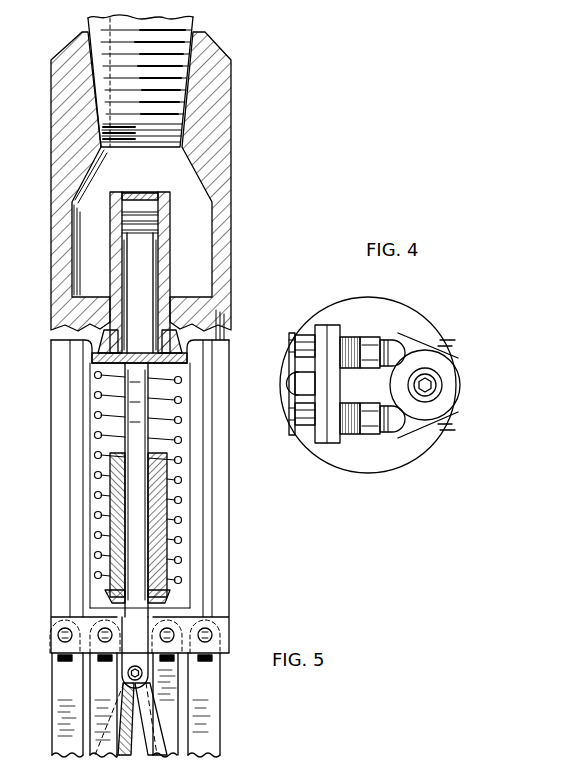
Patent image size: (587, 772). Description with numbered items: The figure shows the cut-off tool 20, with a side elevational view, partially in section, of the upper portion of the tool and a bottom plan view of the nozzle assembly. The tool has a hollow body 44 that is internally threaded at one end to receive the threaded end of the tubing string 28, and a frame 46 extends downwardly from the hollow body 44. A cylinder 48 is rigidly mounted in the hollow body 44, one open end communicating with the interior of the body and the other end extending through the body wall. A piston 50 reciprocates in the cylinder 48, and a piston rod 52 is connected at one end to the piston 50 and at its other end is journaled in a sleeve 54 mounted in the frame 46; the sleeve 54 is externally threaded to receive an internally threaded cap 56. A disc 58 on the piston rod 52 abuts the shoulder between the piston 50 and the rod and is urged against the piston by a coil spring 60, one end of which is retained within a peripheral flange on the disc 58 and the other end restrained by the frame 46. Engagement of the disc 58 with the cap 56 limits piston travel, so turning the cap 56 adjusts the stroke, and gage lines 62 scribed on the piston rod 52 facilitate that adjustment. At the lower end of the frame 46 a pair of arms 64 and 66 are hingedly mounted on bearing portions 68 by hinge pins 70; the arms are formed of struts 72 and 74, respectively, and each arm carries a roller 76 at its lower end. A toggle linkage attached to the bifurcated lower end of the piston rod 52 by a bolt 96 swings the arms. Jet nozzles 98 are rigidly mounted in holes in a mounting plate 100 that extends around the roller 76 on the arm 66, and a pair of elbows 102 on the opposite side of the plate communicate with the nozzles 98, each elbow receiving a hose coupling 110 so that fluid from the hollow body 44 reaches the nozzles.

In FIG. 5, the cut-off tool 20 is at (241, 158).
In FIG. 5, the tubing string 28 is at (193, 20).
In FIG. 5, the hollow body 44 is at (215, 104).
In FIG. 5, the frame 46 is at (218, 590).
In FIG. 5, the cylinder 48 is at (167, 258).
In FIG. 5, the piston 50 is at (135, 258).
In FIG. 5, the piston rod 52 is at (140, 565).
In FIG. 5, the sleeve 54 is at (165, 533).
In FIG. 5, the cap 56 is at (108, 543).
In FIG. 5, the disc 58 is at (90, 352).
In FIG. 5, the coil spring 60 is at (97, 435).
In FIG. 5, the gage lines 62 is at (133, 405).
In FIG. 5, the arm 64 is at (200, 759).
In FIG. 5, the arm 66 is at (68, 758).
In FIG. 5, the bearing portions 68 is at (84, 661).
In FIG. 5, the hinge pins 70 is at (100, 625).
In FIG. 5, the struts 72 is at (173, 725).
In FIG. 5, the struts 74 is at (66, 714).
In FIG. 4, the roller 76 is at (436, 372).
In FIG. 5, the bolt 96 is at (135, 666).
In FIG. 4, the jet nozzles 98 is at (303, 335).
In FIG. 4, the mounting plate 100 is at (327, 333).
In FIG. 4, the elbows 102 is at (366, 346).
In FIG. 4, the coupling 110 is at (399, 342).